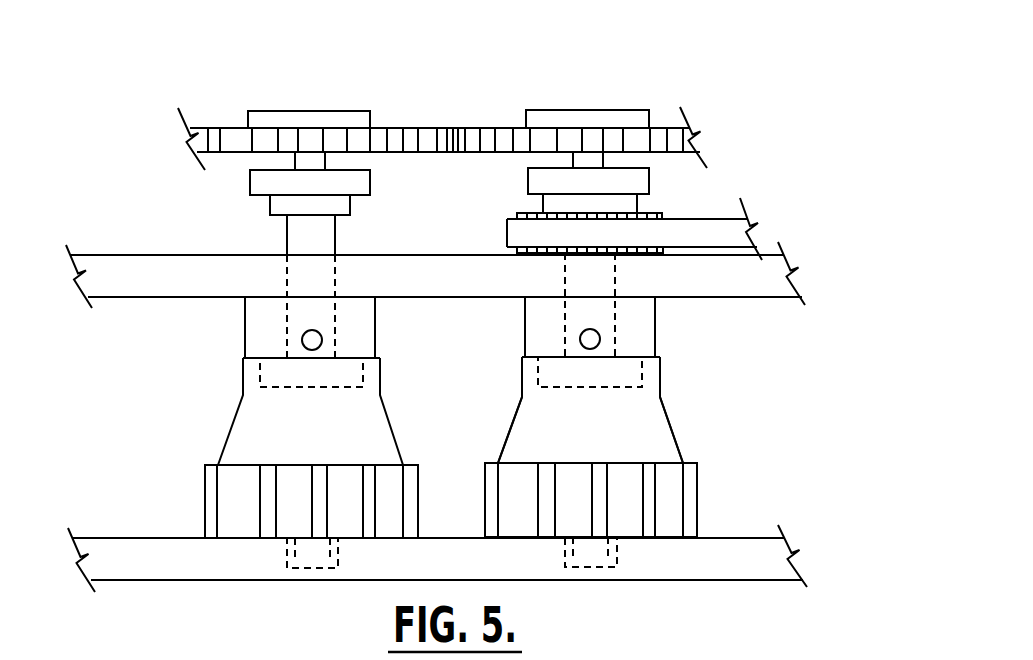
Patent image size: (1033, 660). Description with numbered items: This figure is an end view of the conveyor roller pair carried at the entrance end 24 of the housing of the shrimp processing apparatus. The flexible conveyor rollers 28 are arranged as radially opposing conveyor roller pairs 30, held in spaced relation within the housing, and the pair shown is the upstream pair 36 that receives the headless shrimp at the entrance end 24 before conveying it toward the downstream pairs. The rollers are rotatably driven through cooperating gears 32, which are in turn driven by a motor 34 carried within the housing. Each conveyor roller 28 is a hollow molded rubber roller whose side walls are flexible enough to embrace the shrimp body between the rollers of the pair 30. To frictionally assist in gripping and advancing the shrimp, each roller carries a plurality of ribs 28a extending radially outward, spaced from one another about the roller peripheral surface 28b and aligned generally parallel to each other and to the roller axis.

The entrance end 24 is at (175, 515).
The flexible conveyor roller 28 is at (527, 440).
The ribs 28a is at (268, 488).
The roller peripheral surface 28b is at (457, 547).
The conveyor roller pair 30 is at (664, 380).
The cooperating gears 32 is at (602, 103).
The motor 34 is at (828, 218).
The upstream pair of conveyor rollers 36 is at (698, 325).